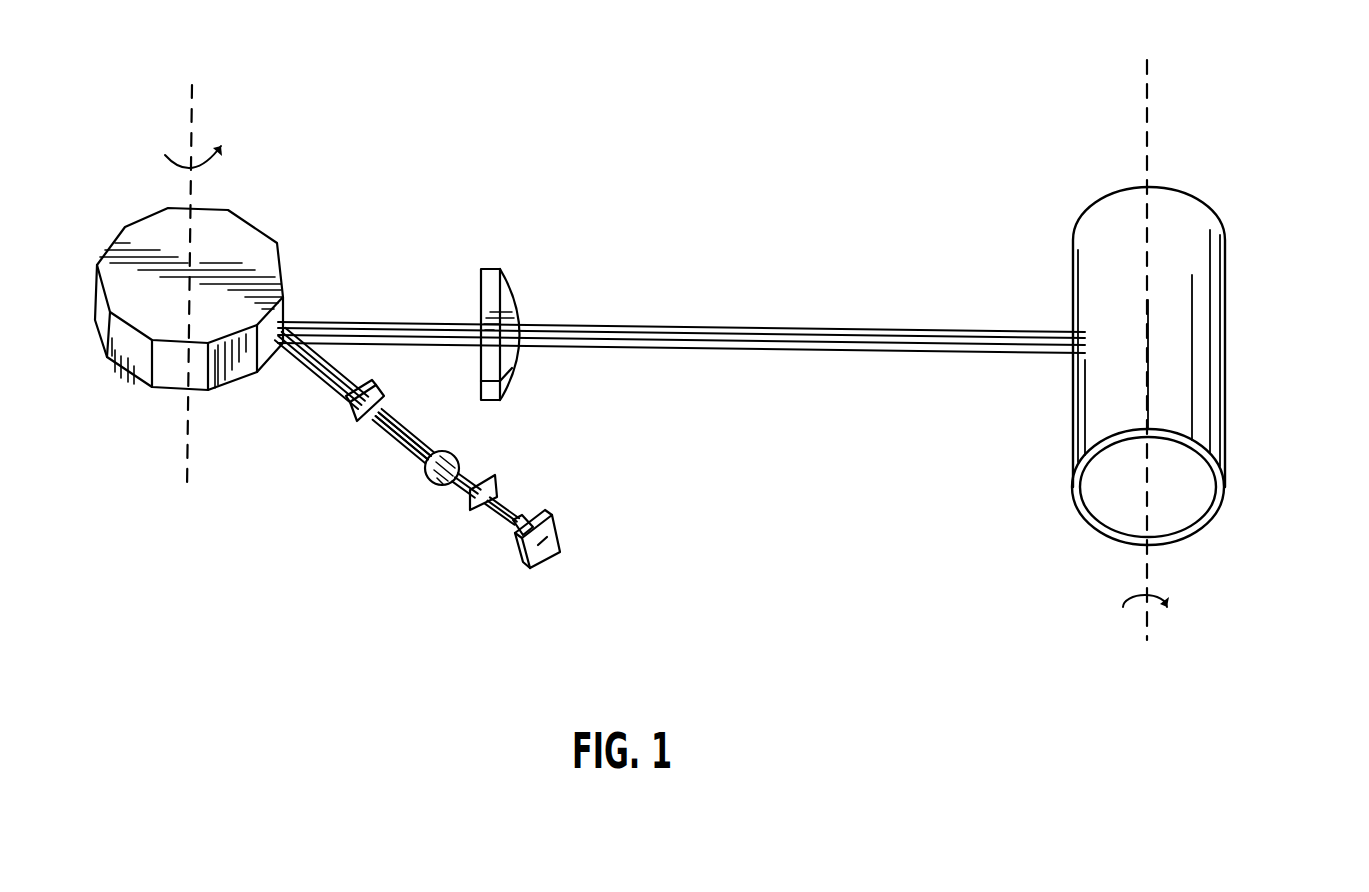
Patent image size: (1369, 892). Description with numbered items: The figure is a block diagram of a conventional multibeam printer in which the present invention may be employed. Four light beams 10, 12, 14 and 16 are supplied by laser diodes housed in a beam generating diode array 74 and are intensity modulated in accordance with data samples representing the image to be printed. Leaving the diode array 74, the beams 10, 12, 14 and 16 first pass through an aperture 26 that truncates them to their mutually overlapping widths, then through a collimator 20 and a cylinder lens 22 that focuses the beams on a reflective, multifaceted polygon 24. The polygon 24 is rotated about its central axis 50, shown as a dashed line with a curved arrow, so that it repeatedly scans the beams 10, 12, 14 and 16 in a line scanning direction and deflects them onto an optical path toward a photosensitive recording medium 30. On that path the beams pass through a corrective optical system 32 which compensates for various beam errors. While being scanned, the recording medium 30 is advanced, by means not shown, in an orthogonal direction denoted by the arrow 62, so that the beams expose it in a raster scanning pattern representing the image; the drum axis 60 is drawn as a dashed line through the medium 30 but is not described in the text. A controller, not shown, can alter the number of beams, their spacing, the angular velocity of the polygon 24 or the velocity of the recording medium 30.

The light beam 10 is at (427, 434).
The light beam 12 is at (428, 442).
The light beam 14 is at (415, 452).
The light beam 16 is at (402, 445).
The collimator 20 is at (457, 458).
The cylinder lens 22 is at (353, 417).
The polygon 24 is at (243, 237).
The aperture 26 is at (470, 512).
The photosensitive recording medium 30 is at (1203, 335).
The corrective optical system 32 is at (497, 290).
The central axis 50 is at (198, 130).
The drum axis 60 is at (1147, 562).
The arrow 62 is at (1168, 605).
The beam generating diode array 74 is at (565, 530).